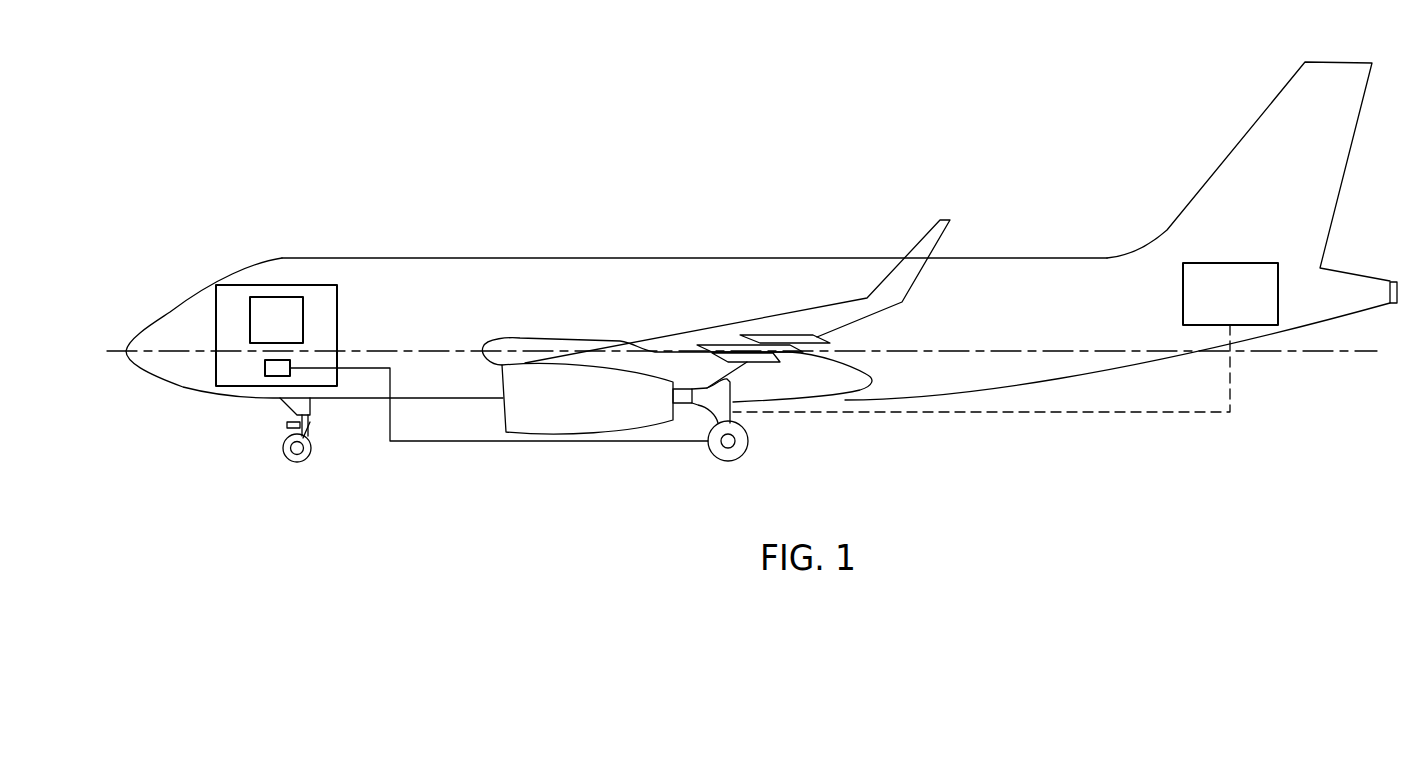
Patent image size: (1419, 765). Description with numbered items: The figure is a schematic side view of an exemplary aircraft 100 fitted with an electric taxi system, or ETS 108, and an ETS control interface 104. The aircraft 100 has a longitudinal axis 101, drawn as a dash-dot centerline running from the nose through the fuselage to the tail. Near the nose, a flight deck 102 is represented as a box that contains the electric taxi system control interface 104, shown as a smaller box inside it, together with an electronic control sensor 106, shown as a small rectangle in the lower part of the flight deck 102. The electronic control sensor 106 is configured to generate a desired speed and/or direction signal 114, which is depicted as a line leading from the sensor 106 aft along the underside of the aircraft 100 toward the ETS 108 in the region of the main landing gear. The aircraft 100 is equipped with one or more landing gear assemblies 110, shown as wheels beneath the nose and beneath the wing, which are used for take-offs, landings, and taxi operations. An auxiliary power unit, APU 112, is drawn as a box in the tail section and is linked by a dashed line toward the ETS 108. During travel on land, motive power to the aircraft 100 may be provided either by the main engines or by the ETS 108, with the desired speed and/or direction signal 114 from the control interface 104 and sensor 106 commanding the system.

The aircraft 100 is at (658, 258).
The longitudinal axis 101 is at (1013, 350).
The flight deck 102 is at (340, 300).
The ETS control interface 104 is at (268, 297).
The electronic control sensor 106 is at (275, 377).
The ETS 108 is at (785, 426).
The landing gear assembly 110 is at (297, 462).
The auxiliary power unit 112 is at (1242, 263).
The desired speed and/or direction signal 114 is at (482, 443).